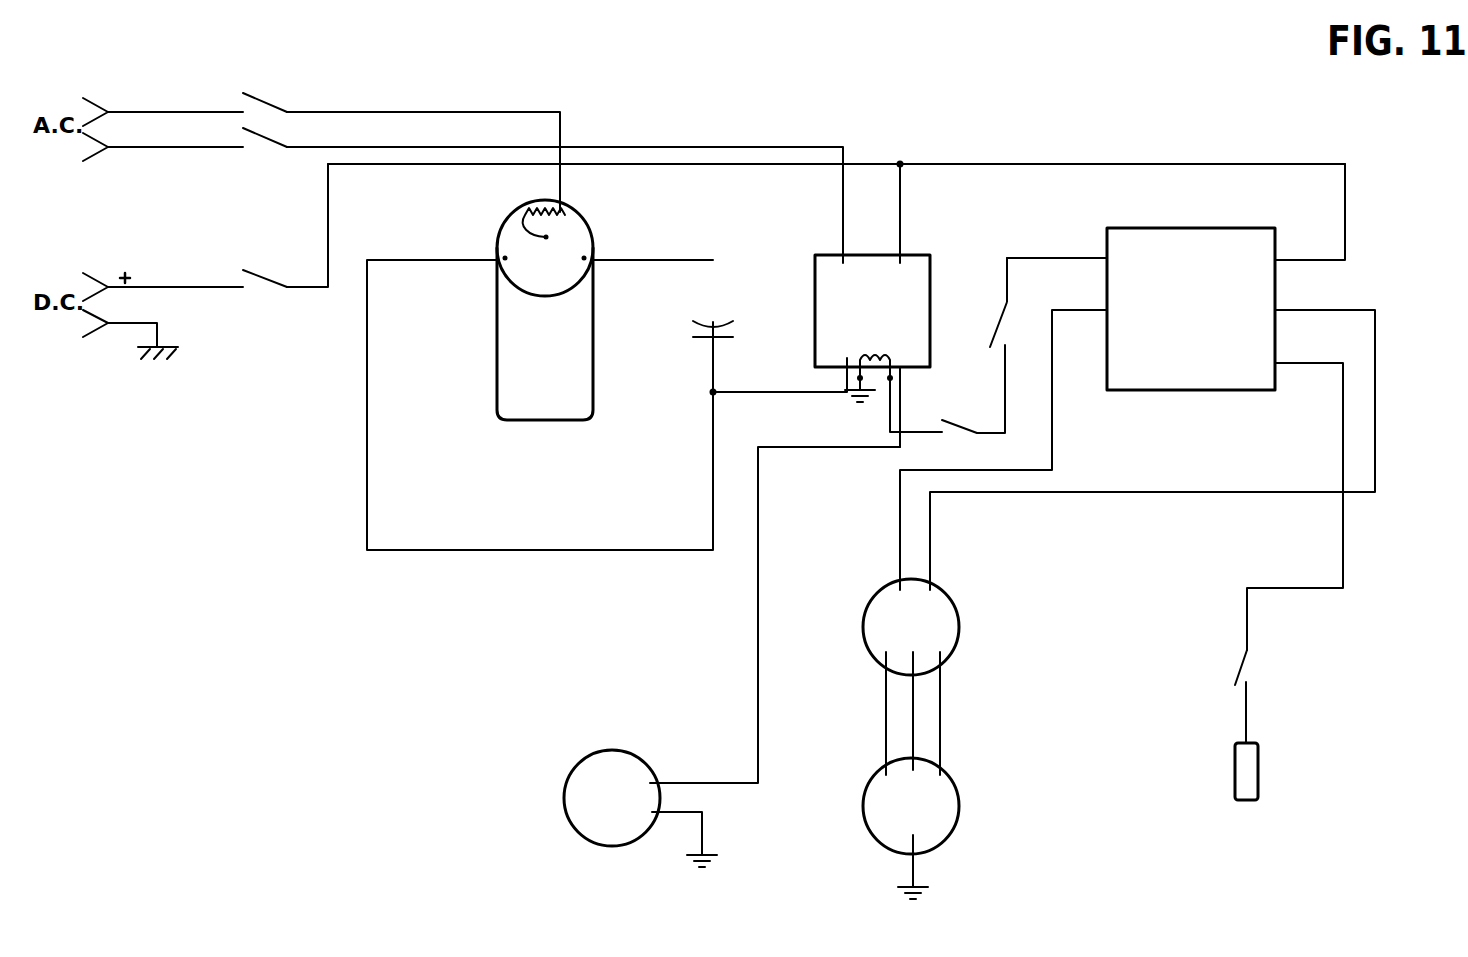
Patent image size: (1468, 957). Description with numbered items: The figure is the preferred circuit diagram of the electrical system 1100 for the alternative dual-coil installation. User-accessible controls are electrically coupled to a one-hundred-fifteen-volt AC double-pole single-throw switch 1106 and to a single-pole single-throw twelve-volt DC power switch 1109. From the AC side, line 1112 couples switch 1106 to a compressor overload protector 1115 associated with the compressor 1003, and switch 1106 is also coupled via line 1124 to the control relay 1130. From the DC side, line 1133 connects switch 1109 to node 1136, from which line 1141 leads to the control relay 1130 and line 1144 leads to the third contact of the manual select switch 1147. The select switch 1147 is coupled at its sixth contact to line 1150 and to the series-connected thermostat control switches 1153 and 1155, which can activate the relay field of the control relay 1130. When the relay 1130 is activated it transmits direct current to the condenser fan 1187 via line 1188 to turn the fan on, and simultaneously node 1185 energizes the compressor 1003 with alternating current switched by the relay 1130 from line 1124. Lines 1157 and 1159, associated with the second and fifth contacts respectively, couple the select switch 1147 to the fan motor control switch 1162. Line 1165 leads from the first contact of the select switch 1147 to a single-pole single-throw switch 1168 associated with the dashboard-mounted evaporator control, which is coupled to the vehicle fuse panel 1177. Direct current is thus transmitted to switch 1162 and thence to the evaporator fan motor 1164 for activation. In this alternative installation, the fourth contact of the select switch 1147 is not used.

The compressor 1003 is at (590, 216).
The electrical system 1100 is at (1203, 106).
The D.P.S.T. switch 1106 is at (262, 86).
The DC power switch 1109 is at (256, 303).
The line 1112 is at (410, 111).
The compressor overload protector 1115 is at (528, 211).
The line 1124 is at (613, 146).
The control relay 1130 is at (812, 250).
The line 1133 is at (328, 203).
The node 1136 is at (903, 160).
The line 1141 is at (902, 205).
The line 1144 is at (1276, 165).
The manual select switch 1147 is at (1181, 225).
The line 1150 is at (1085, 256).
The thermostat control switch 1153 is at (991, 330).
The thermostat control switch 1155 is at (963, 393).
The line 1157 is at (1286, 492).
The line 1159 is at (1053, 448).
The fan motor control switch 1162 is at (958, 595).
The evaporator fan motor 1164 is at (958, 840).
The line 1165 is at (1343, 547).
The S.P.S.T. switch 1168 is at (1237, 672).
The vehicle fuse panel 1177 is at (1235, 770).
The node 1185 is at (712, 390).
The condenser fan 1187 is at (583, 752).
The line 1188 is at (756, 655).